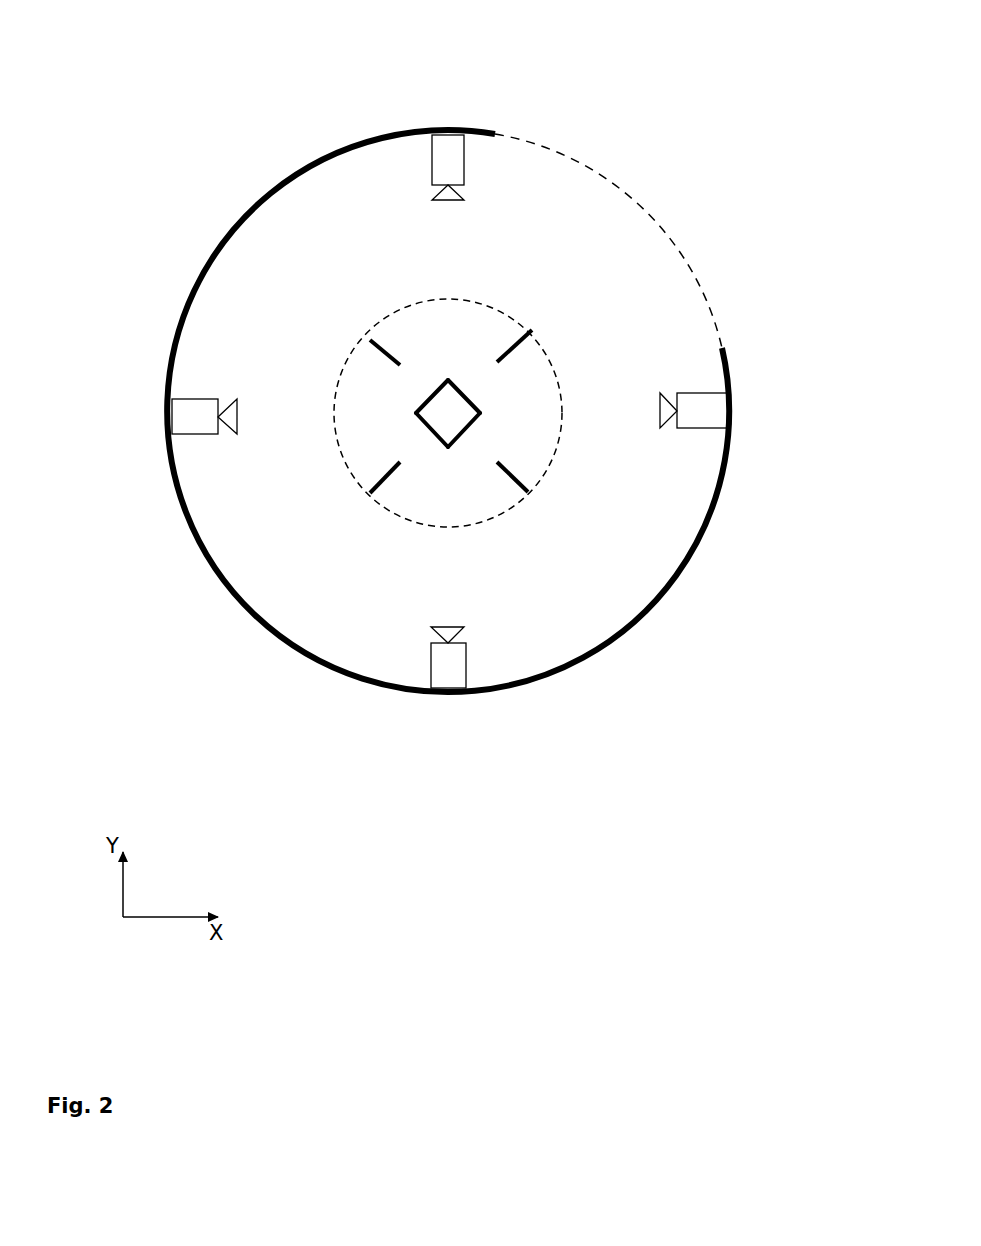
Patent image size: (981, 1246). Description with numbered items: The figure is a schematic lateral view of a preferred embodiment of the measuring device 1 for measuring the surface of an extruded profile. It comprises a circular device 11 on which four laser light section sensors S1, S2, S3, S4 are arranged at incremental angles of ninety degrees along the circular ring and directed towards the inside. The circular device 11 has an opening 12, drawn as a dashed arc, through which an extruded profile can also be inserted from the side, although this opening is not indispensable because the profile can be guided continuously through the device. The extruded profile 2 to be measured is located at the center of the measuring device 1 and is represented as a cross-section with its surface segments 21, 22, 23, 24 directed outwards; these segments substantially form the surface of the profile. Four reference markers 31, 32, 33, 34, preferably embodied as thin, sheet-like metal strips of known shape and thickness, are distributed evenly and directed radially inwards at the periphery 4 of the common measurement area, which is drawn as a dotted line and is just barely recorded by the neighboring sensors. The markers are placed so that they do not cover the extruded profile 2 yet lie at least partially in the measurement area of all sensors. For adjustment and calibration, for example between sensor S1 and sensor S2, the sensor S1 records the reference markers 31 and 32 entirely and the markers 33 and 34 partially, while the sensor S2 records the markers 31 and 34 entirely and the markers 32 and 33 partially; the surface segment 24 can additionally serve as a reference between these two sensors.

The measuring device 1 is at (268, 135).
The circular device 11 is at (218, 248).
The opening 12 is at (602, 180).
The extruded profile 2 is at (452, 417).
The surface segment 21 is at (428, 432).
The surface segment 22 is at (425, 402).
The surface segment 23 is at (465, 390).
The surface segment 24 is at (472, 425).
The reference marker 31 is at (527, 493).
The reference marker 32 is at (372, 492).
The reference marker 33 is at (360, 336).
The reference marker 34 is at (513, 348).
The periphery 4 is at (560, 440).
The laser light section sensor S1 is at (453, 680).
The laser light section sensor S2 is at (712, 413).
The laser light section sensor S3 is at (448, 153).
The laser light section sensor S4 is at (182, 420).